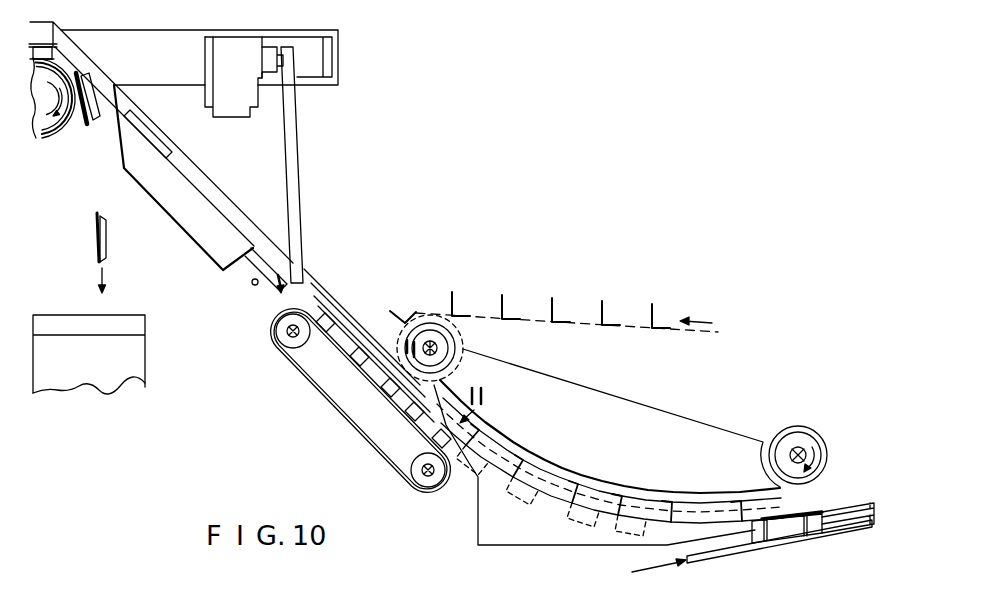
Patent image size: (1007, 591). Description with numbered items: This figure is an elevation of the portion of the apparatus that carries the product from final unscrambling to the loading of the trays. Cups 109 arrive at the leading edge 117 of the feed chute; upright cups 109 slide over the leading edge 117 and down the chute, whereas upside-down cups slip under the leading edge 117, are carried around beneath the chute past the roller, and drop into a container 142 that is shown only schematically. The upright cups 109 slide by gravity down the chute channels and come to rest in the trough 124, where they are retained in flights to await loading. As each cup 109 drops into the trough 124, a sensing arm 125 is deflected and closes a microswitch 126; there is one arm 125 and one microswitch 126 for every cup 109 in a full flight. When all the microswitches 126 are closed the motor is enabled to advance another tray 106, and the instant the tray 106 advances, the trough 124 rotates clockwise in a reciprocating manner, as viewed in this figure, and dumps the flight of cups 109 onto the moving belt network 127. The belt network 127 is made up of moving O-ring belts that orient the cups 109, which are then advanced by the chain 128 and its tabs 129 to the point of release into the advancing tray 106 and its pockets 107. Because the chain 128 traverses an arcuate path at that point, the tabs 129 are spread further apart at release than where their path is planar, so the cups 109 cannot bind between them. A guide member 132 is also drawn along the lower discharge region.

The tray 106 is at (828, 530).
The pocket 107 is at (799, 535).
The cup 109 is at (87, 128).
The leading edge 117 is at (64, 32).
The trough 124 is at (261, 272).
The sensing arm 125 is at (293, 120).
The microswitch 126 is at (268, 50).
The belt network 127 is at (344, 413).
The chain 128 is at (583, 322).
The tab 129 is at (503, 300).
The guide bar 132 is at (715, 560).
The container 142 is at (128, 368).